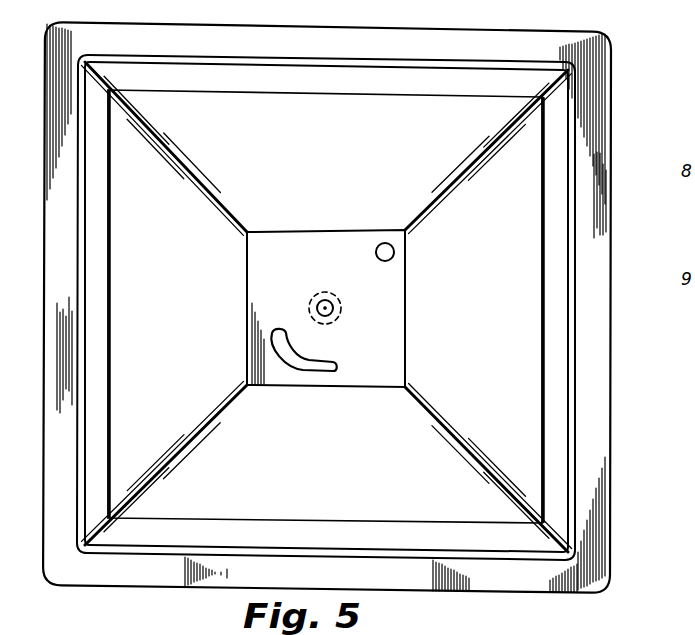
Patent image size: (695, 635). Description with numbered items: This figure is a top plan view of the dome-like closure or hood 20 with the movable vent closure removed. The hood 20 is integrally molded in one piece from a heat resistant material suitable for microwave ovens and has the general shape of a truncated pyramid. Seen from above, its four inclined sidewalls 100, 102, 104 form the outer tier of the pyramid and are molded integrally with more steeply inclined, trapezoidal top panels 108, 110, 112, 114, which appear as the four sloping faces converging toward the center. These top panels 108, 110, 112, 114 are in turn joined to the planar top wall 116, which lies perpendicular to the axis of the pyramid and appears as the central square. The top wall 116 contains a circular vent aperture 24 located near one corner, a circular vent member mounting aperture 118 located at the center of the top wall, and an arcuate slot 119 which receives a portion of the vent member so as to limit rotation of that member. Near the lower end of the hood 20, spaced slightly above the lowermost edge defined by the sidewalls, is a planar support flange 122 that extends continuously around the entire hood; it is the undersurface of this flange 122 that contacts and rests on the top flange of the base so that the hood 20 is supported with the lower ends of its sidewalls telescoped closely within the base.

The hood 20 is at (558, 25).
The circular vent aperture 24 is at (395, 250).
The inclined sidewall 100 is at (485, 537).
The inclined sidewall 102 is at (560, 397).
The inclined sidewall 104 is at (230, 78).
The trapezoidal top panel 108 is at (332, 470).
The trapezoidal top panel 110 is at (475, 326).
The trapezoidal top panel 112 is at (340, 164).
The trapezoidal top panel 114 is at (188, 319).
The planar top wall 116 is at (300, 262).
The circular vent member mounting aperture 118 is at (335, 300).
The arcuate slot 119 is at (302, 350).
The planar support flange 122 is at (102, 567).